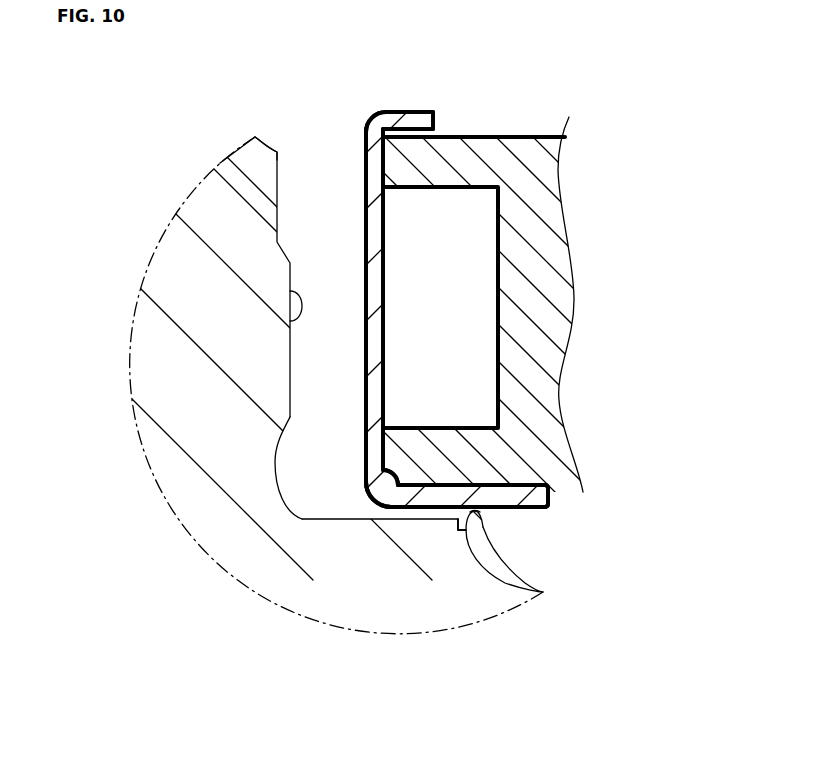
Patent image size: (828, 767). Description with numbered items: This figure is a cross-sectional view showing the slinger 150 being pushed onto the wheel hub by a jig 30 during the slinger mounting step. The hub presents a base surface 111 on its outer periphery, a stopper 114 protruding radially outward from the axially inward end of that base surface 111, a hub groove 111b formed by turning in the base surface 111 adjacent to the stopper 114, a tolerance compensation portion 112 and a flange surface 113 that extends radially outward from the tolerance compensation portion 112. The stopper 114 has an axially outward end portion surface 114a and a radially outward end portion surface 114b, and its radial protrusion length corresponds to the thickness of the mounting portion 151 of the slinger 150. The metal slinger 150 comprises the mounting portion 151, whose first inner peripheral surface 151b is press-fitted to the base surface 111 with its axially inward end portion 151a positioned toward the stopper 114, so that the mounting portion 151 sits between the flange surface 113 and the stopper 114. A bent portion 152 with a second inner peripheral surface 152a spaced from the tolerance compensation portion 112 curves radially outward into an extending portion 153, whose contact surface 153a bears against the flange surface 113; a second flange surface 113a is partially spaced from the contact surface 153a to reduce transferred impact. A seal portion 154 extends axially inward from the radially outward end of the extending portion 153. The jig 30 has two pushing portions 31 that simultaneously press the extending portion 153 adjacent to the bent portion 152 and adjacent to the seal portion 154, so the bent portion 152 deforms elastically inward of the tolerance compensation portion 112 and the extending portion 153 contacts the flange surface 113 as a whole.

The jig 30 is at (474, 137).
The pushing portions 31 is at (382, 163).
The base surface 111 is at (382, 518).
The hub groove 111b is at (482, 527).
The tolerance compensation portion 112 is at (281, 480).
The flange surface 113 is at (290, 323).
The second flange surface 113a is at (280, 192).
The stopper 114 is at (478, 511).
The axially outward end portion surface 114a is at (463, 525).
The radially outward end portion surface 114b is at (482, 509).
The slinger 150 is at (439, 243).
The mounting portion 151 is at (527, 498).
The axially inward end portion 151a is at (550, 500).
The first inner peripheral surface 151b is at (432, 505).
The bent portion 152 is at (396, 479).
The second inner peripheral surface 152a is at (388, 503).
The extending portion 153 is at (380, 285).
The contact surface 153a is at (363, 245).
The seal portion 154 is at (418, 120).